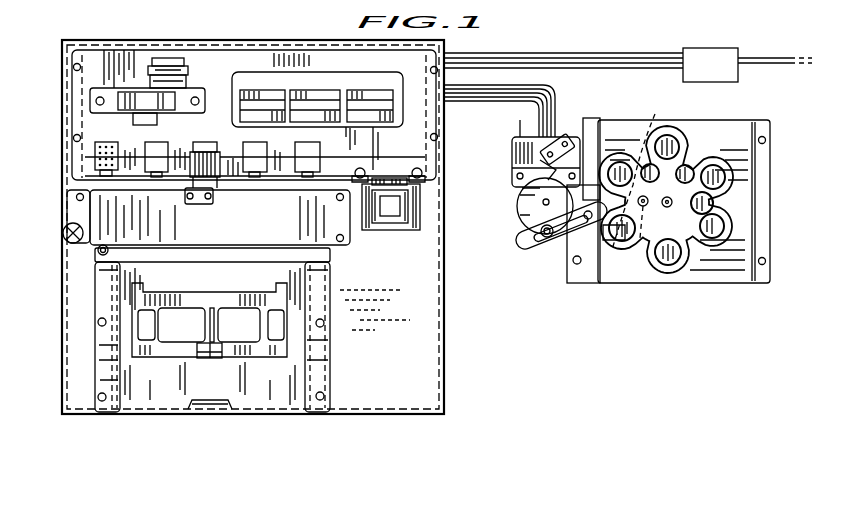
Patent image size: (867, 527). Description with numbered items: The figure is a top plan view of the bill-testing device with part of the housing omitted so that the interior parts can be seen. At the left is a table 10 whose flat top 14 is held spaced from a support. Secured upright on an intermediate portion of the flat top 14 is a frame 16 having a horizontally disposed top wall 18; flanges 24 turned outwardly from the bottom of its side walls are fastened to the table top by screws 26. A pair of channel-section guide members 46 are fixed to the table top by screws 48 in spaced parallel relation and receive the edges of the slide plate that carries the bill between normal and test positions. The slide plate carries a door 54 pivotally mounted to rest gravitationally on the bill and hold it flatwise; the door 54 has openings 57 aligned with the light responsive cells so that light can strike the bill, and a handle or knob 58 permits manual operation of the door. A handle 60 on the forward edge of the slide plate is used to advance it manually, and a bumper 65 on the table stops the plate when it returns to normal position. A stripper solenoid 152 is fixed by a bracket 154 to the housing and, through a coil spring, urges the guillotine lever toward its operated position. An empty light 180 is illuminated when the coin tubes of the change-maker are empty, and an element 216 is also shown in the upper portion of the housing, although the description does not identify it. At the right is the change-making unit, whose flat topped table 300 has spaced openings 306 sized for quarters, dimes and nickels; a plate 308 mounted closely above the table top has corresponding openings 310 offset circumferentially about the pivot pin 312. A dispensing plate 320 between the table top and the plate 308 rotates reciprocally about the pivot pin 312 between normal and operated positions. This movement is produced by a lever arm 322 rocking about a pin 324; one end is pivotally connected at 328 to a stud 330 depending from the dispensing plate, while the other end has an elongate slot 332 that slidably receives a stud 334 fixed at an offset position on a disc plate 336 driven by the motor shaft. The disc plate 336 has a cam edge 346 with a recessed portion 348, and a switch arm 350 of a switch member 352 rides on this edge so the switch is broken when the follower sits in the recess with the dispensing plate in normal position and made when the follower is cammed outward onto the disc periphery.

The table 10 is at (447, 366).
The flat top 14 is at (405, 371).
The frame 16 is at (324, 217).
The top wall 18 is at (282, 226).
The flanges 24 is at (80, 208).
The screws 26 is at (74, 198).
The guide members 46 is at (97, 372).
The screws 48 is at (101, 412).
The door 54 is at (186, 306).
The openings 57 is at (266, 321).
The handle or knob 58 is at (206, 358).
The handle 60 is at (210, 412).
The bumper 65 is at (98, 254).
The stripper solenoid 152 is at (213, 158).
The bracket 154 is at (198, 204).
The empty light 180 is at (64, 239).
The capacitor assembly 216 is at (189, 78).
The flat topped table 300 is at (740, 273).
The openings 306 is at (586, 188).
The plate 308 is at (722, 194).
The openings 310 is at (676, 267).
The pivot pin 312 is at (680, 188).
The dispensing plate 320 is at (617, 258).
The lever arm 322 is at (527, 242).
The pin 324 is at (580, 234).
The pivotal connection 328 is at (640, 173).
The stud 330 is at (639, 262).
The elongate slot 332 is at (537, 234).
The stud 334 is at (519, 216).
The disc plate 336 is at (514, 190).
The cam edge 346 is at (530, 140).
The recessed portion 348 is at (545, 172).
The switch arm 350 is at (587, 137).
The switch member 352 is at (560, 138).